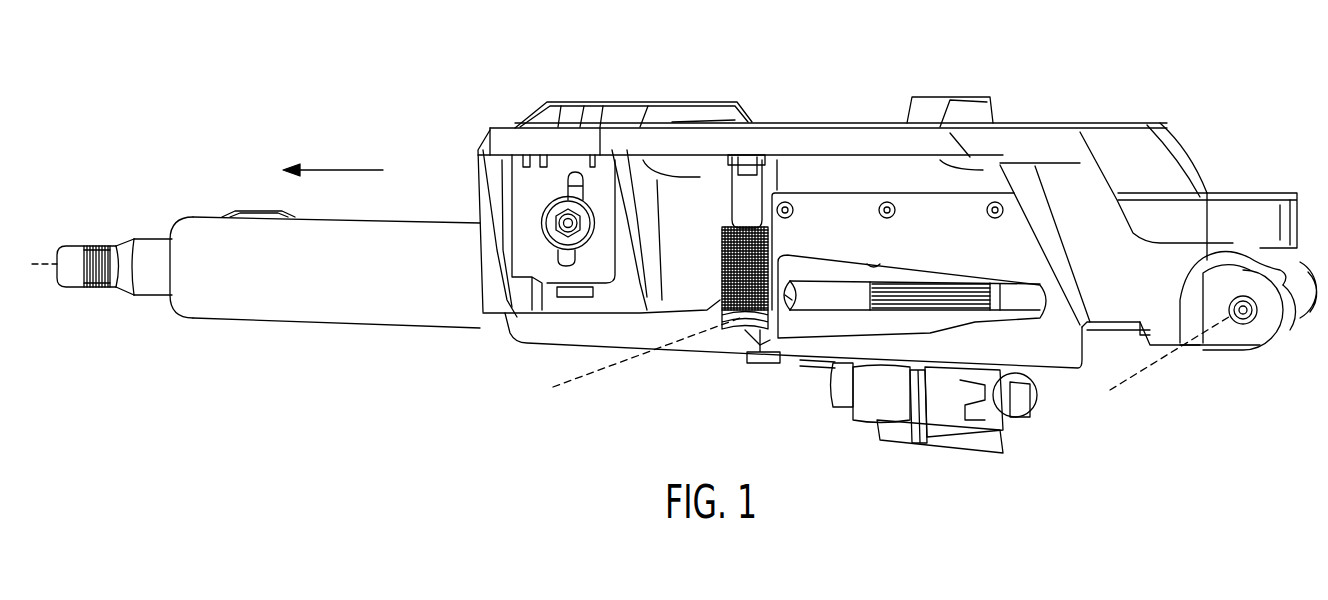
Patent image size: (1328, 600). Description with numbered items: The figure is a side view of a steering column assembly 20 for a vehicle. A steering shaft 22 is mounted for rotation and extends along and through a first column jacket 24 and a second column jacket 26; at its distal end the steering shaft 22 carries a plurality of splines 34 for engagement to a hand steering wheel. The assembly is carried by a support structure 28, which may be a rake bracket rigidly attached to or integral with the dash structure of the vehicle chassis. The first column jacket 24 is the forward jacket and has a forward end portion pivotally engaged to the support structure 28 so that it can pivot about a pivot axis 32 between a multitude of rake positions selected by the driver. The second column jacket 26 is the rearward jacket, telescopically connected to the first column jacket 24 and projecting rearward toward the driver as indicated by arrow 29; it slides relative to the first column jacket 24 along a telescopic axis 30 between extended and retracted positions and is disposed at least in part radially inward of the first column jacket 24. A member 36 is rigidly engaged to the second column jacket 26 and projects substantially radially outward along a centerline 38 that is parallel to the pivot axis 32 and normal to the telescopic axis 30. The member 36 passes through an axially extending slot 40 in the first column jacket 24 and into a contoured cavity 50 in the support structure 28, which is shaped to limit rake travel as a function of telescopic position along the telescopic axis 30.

The steering column assembly 20 is at (185, 90).
The steering shaft 22 is at (163, 283).
The first column jacket 24 is at (1257, 198).
The second column jacket 26 is at (413, 310).
The support structure 28 is at (830, 122).
The arrow 29 is at (342, 168).
The telescopic axis 30 is at (41, 260).
The pivot axis 32 is at (1157, 357).
The splines 34 is at (100, 287).
The member 36 is at (790, 305).
The centerline 38 is at (583, 378).
The slot 40 is at (920, 287).
The contoured cavity 50 is at (884, 262).